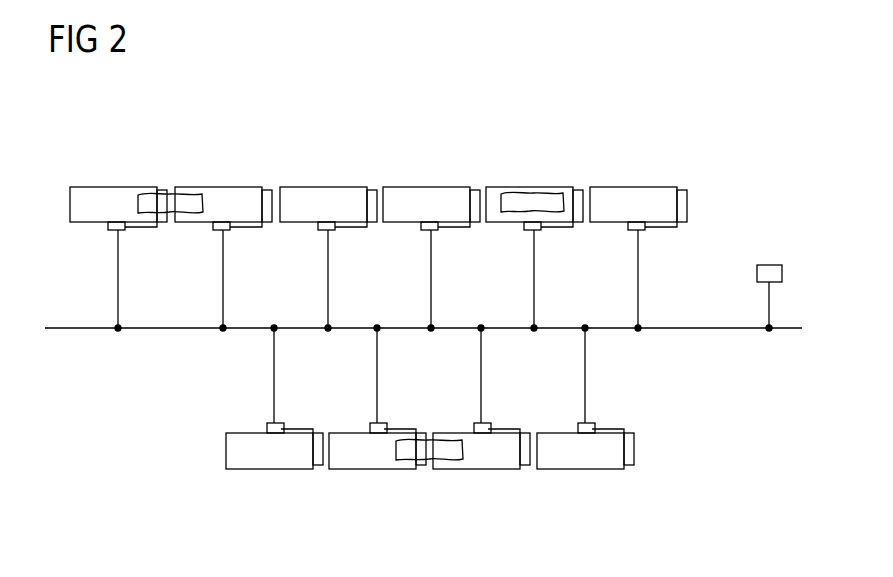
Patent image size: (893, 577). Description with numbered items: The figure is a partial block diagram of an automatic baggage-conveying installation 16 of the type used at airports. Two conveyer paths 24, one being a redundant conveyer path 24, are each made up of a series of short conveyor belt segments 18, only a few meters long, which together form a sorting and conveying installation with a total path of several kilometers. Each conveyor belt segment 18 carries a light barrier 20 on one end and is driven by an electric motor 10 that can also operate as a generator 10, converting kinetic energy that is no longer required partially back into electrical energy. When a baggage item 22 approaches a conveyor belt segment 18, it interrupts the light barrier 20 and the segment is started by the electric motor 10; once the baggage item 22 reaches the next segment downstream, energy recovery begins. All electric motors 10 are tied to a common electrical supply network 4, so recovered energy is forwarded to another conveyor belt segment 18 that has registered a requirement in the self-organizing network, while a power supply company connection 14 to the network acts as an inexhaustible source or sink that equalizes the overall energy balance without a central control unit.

The electrical supply network 4 is at (708, 327).
The electric motor 10 is at (112, 232).
The power supply company connection 14 is at (782, 272).
The automatic baggage-conveying installation 16 is at (737, 95).
The conveyor belt segment 18 is at (97, 187).
The light barrier 20 is at (160, 189).
The baggage item 22 is at (192, 193).
The conveyer path 24 is at (735, 202).